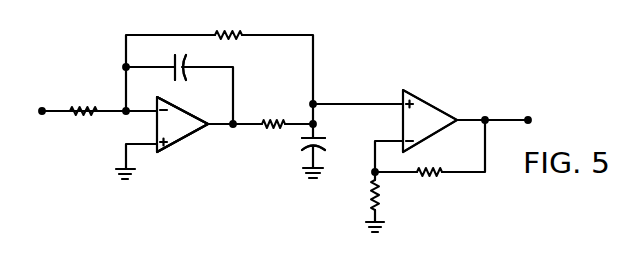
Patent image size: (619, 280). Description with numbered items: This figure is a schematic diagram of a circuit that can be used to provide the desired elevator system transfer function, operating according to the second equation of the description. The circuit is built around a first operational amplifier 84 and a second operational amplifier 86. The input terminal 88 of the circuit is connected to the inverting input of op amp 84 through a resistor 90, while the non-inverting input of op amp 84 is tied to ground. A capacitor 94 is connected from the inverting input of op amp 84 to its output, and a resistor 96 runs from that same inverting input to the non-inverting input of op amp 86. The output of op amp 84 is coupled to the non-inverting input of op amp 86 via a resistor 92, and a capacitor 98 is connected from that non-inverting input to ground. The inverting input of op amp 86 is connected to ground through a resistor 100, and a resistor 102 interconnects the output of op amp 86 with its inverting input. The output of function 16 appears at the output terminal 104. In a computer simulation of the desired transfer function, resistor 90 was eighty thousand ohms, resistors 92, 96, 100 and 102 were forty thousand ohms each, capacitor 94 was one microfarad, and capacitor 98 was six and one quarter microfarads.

The function 16 is at (246, 165).
The first operational amplifier 84 is at (189, 108).
The second operational amplifier 86 is at (428, 99).
The input terminal 88 is at (42, 111).
The resistor 90 is at (91, 105).
The resistor 92 is at (270, 117).
The capacitor 94 is at (180, 58).
The resistor 96 is at (233, 39).
The capacitor 98 is at (328, 148).
The resistor 100 is at (368, 195).
The resistor 102 is at (424, 170).
The output terminal 104 is at (528, 118).